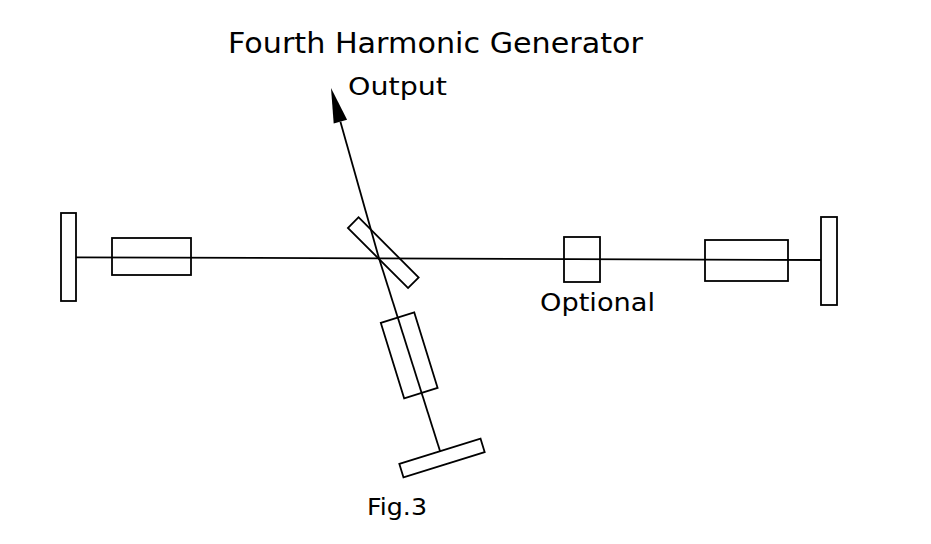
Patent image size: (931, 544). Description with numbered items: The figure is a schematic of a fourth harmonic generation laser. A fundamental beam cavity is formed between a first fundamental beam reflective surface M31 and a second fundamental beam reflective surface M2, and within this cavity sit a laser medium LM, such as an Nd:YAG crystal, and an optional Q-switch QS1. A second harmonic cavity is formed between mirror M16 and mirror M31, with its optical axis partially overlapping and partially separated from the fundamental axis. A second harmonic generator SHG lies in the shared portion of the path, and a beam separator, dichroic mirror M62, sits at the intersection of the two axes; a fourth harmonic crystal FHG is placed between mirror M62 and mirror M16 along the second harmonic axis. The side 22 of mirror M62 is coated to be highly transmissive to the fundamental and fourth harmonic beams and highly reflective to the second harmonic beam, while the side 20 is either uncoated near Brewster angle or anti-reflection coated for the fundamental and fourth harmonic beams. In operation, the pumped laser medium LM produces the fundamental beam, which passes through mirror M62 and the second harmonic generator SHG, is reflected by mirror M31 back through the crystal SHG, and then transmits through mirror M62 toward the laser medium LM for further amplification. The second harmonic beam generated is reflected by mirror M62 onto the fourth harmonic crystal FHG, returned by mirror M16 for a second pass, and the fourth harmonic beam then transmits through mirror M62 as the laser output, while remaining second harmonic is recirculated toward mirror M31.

The side 20 is at (600, 244).
The side 22 is at (227, 243).
The first fundamental beam reflective surface M31 is at (82, 239).
The second harmonic generator SHG is at (151, 242).
The dichroic mirror M62 is at (362, 235).
The Q-switch QS1 is at (585, 245).
The laser medium LM is at (746, 245).
The second fundamental beam reflective surface M2 is at (825, 243).
The fourth harmonic crystal FHG is at (433, 355).
The mirror M16 is at (447, 443).